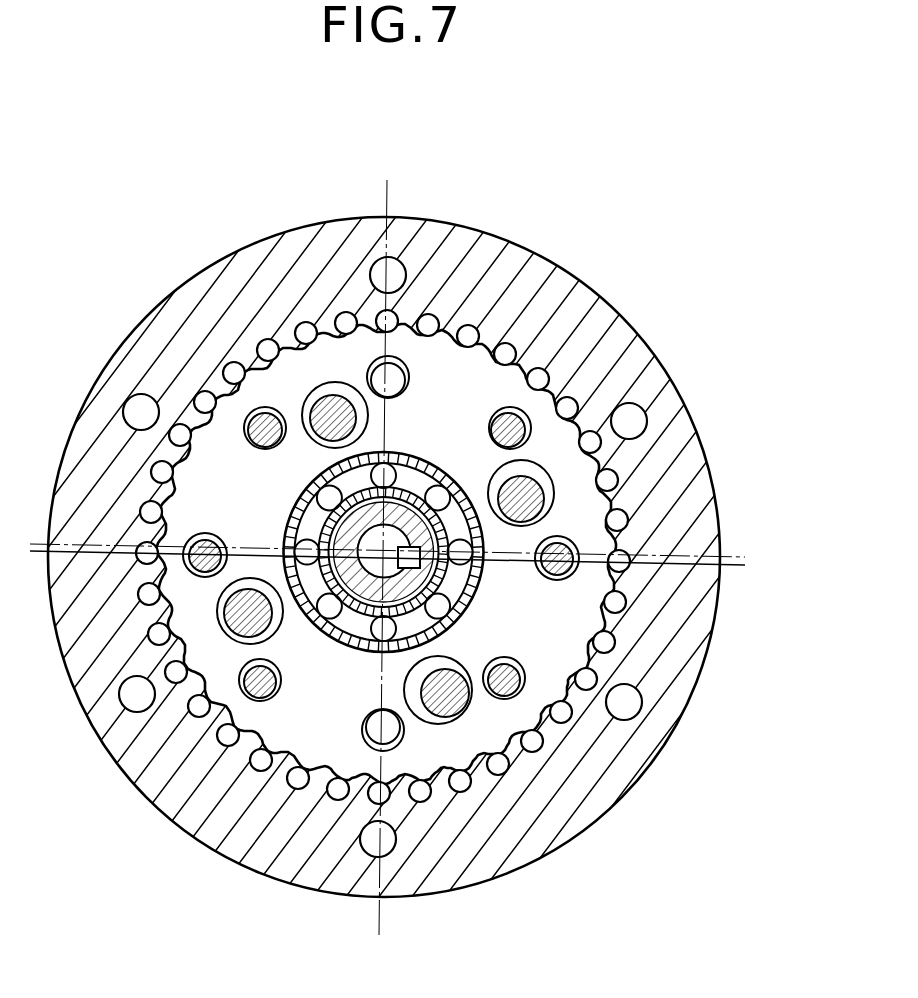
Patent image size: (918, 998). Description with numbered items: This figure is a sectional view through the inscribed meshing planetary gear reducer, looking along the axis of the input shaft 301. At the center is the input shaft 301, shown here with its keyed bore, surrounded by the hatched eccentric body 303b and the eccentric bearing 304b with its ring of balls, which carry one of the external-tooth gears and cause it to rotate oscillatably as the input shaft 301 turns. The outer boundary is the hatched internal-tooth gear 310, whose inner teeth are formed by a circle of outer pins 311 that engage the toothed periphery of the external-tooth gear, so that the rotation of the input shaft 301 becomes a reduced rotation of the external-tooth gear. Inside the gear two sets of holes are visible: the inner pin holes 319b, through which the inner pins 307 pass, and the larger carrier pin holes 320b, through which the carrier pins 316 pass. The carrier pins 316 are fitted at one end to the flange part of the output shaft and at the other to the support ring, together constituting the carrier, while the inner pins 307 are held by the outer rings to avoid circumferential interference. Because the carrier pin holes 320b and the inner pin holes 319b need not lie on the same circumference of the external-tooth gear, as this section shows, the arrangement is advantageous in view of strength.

The input shaft 301 is at (387, 622).
The eccentric bearing 303b is at (533, 635).
The bearing outer ring 304b is at (473, 617).
The inner pin 307 is at (513, 433).
The internal-tooth gear 310 is at (428, 248).
The outer pin 311 is at (506, 348).
The carrier pin 316 is at (527, 505).
The inner pin hole 319b is at (530, 410).
The carrier pin hole 320b is at (540, 478).